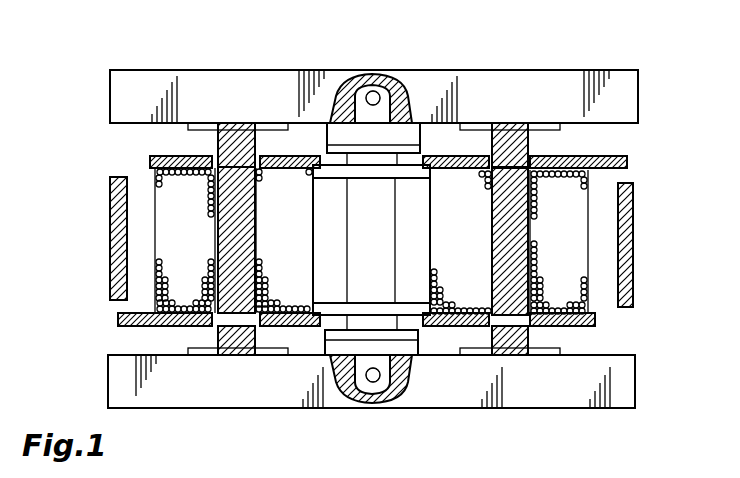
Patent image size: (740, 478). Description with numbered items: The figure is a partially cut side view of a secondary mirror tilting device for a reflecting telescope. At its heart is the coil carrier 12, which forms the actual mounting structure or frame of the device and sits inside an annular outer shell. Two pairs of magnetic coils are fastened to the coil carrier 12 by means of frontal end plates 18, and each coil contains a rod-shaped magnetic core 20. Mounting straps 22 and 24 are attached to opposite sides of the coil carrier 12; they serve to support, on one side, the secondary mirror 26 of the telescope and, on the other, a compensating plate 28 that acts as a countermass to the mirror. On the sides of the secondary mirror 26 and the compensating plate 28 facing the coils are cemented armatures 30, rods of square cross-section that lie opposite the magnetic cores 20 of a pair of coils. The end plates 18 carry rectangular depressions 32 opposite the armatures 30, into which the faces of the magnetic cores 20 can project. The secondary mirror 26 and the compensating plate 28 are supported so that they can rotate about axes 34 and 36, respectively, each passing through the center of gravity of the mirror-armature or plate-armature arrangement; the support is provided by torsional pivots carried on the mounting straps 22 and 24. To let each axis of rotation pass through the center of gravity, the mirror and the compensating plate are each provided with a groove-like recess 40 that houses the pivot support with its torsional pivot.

The coil carrier 12 is at (385, 232).
The end plates 18 is at (627, 163).
The magnetic core 20 is at (228, 240).
The mounting strap 22 is at (385, 370).
The mounting strap 24 is at (395, 77).
The secondary mirror 26 is at (587, 392).
The compensating plate 28 is at (620, 100).
The armatures 30 is at (227, 146).
The rectangular depressions 32 is at (258, 170).
The axis 34 is at (375, 390).
The axis 36 is at (376, 88).
The groove-like recess 40 is at (357, 80).